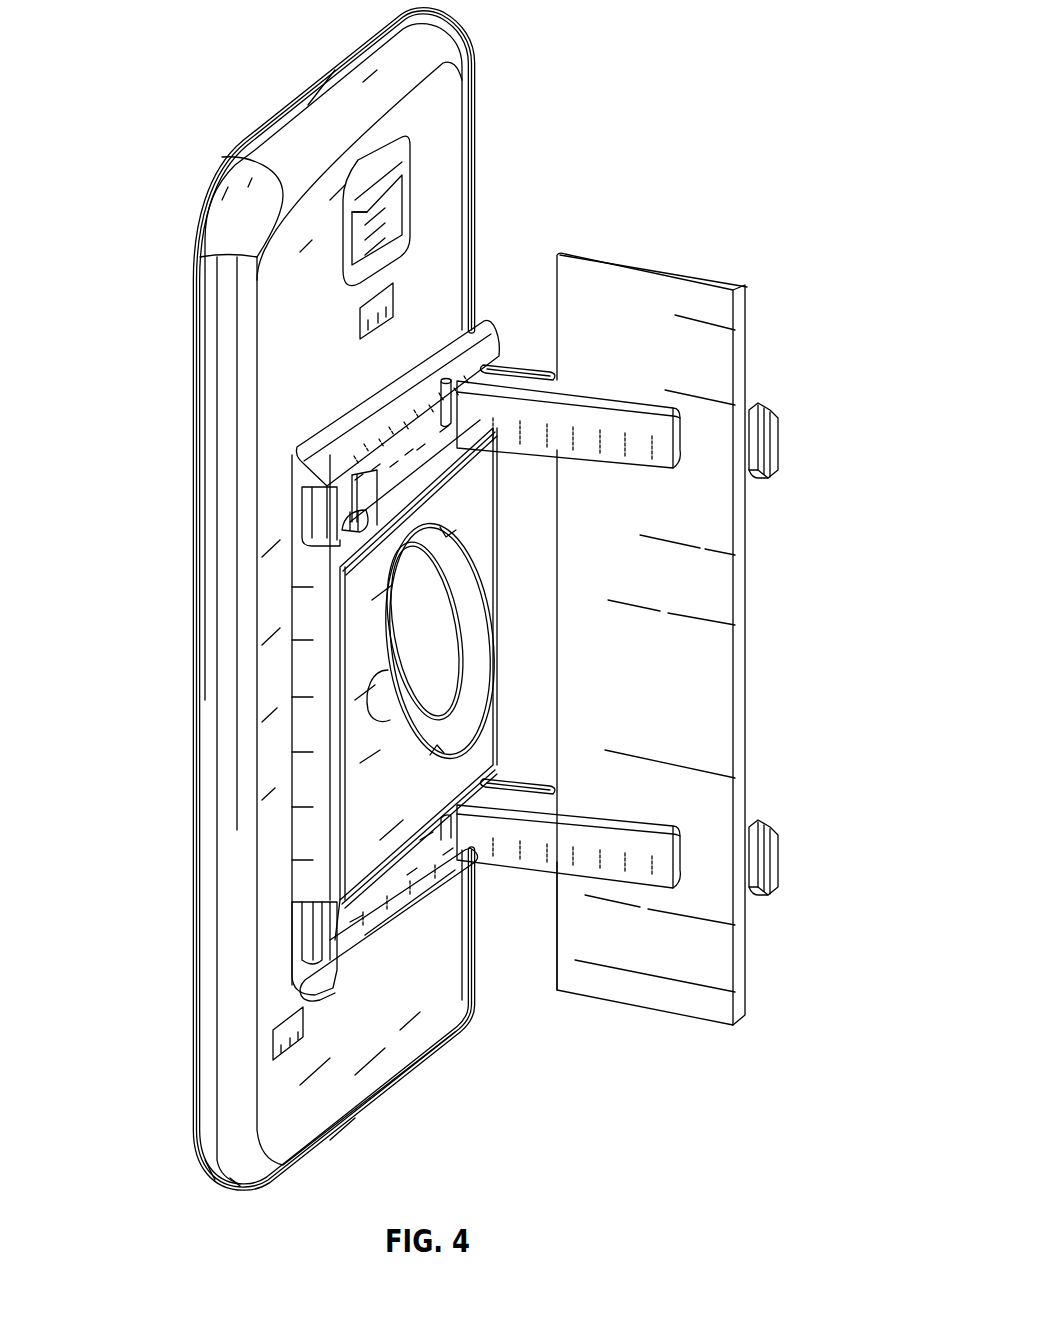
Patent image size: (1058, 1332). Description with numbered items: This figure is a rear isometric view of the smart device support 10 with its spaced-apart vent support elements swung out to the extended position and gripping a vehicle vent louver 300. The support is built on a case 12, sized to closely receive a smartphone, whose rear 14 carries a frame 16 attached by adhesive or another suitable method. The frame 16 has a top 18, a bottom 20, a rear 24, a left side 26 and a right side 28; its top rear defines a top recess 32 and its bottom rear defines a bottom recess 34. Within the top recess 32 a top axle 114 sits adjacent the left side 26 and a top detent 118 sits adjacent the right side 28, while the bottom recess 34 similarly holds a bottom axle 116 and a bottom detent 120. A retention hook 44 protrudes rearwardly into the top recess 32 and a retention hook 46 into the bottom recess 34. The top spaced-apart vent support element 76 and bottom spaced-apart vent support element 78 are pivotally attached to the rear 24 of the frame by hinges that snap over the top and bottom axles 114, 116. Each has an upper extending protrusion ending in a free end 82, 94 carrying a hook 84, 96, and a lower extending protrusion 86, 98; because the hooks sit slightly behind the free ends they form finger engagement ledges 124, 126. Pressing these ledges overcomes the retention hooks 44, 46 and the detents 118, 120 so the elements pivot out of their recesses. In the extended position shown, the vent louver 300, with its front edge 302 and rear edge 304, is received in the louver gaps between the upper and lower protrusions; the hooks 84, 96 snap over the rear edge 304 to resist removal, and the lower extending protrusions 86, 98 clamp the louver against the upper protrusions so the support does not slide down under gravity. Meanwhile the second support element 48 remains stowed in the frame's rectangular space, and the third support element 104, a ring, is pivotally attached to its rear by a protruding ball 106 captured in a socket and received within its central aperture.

The smart device support 10 is at (200, 40).
The case 12 is at (236, 139).
The rear 14 is at (447, 92).
The frame 16 is at (473, 671).
The top 18 is at (450, 312).
The bottom 20 is at (470, 925).
The rear 24 is at (310, 892).
The left side 26 is at (495, 628).
The right side 28 is at (313, 946).
The top recess 32 is at (370, 460).
The bottom recess 34 is at (440, 835).
The retention hook 44 is at (343, 521).
The retention hook 46 is at (397, 893).
The second support element 48 is at (378, 590).
The top spaced-apart vent support element 76 is at (802, 438).
The bottom spaced-apart vent support element 78 is at (802, 856).
The free end 82 is at (779, 432).
The hook 84 is at (762, 474).
The lower extending protrusion 86 is at (612, 422).
The free end 94 is at (779, 850).
The hook 96 is at (762, 894).
The lower extending protrusion 98 is at (612, 840).
The third support element 104 is at (400, 735).
The protruding ball 106 is at (380, 690).
The top axle 114 is at (452, 408).
The bottom axle 116 is at (448, 826).
The top detent 118 is at (320, 528).
The bottom detent 120 is at (313, 938).
The finger engagement ledge 124 is at (778, 465).
The finger engagement ledge 126 is at (778, 883).
The vent louver 300 is at (676, 601).
The front edge 302 is at (556, 300).
The rear edge 304 is at (742, 320).